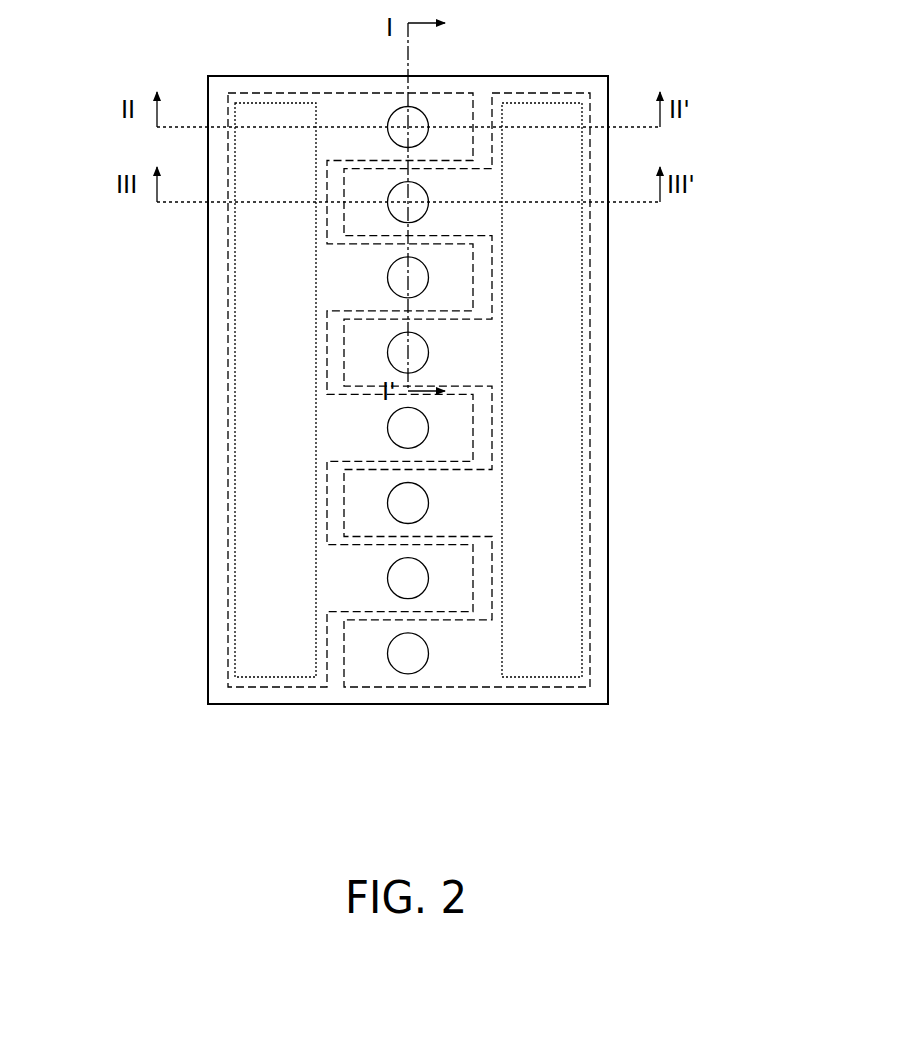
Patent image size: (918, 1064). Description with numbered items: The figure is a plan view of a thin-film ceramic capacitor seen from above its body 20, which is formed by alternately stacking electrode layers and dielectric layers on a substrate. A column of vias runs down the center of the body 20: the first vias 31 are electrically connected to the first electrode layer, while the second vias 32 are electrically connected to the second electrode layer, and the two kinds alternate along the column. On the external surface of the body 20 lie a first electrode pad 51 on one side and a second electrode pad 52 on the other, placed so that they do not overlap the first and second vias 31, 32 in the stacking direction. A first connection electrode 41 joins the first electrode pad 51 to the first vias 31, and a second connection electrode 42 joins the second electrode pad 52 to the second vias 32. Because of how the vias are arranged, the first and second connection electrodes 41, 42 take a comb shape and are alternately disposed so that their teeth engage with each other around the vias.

The body 20 is at (257, 705).
The first via 31 is at (394, 292).
The second via 32 is at (428, 353).
The first connection electrode 41 is at (235, 289).
The second connection electrode 42 is at (590, 360).
The first electrode pad 51 is at (228, 247).
The second electrode pad 52 is at (582, 318).